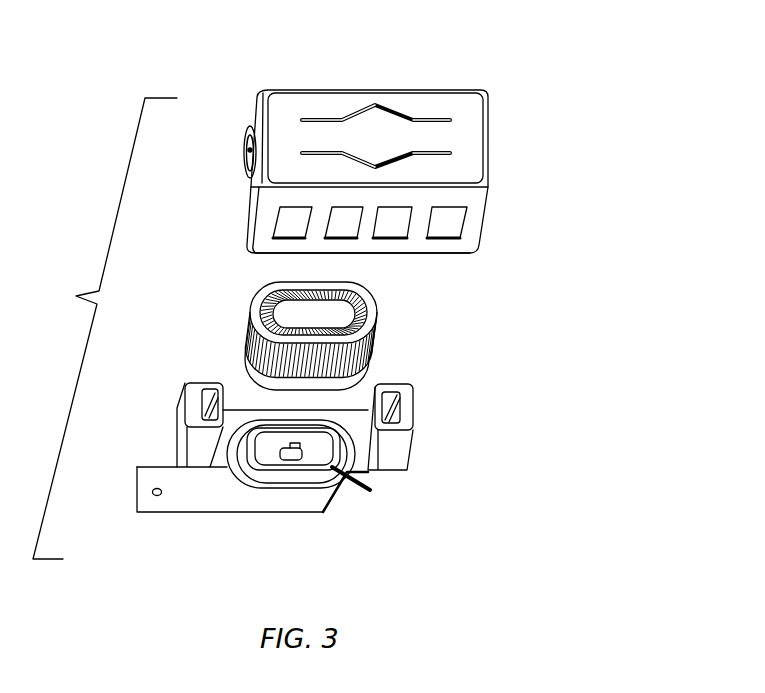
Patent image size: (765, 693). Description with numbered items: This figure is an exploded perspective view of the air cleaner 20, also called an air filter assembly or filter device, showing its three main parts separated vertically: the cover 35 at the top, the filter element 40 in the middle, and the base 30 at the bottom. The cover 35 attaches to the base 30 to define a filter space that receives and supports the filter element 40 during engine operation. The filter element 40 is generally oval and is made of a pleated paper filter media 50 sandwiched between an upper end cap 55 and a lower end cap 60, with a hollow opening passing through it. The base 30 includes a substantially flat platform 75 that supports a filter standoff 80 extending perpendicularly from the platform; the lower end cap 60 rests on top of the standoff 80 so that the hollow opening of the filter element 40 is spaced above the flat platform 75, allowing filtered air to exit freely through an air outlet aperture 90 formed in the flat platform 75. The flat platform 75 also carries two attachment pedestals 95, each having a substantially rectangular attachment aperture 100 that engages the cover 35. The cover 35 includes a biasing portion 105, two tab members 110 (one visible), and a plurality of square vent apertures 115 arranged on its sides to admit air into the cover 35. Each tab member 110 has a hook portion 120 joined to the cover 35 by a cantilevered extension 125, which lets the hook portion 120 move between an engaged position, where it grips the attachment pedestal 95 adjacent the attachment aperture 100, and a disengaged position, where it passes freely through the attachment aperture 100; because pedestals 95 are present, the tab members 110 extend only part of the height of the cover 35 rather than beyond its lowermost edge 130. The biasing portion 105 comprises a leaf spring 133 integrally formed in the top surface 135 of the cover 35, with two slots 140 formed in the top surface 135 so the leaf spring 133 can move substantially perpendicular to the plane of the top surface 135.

The air cleaner 20 is at (502, 63).
The base 30 is at (320, 500).
The cover 35 is at (432, 100).
The filter element 40 is at (375, 315).
The pleated paper filter media 50 is at (363, 357).
The upper end cap 55 is at (304, 312).
The lower end cap 60 is at (247, 357).
The flat platform 75 is at (187, 495).
The filter standoff 80 is at (262, 488).
The air outlet aperture 90 is at (302, 452).
The attachment pedestal 95 is at (190, 445).
The attachment aperture 100 is at (185, 383).
The biasing portion 105 is at (373, 120).
The tab member 110 is at (255, 133).
The vent aperture 115 is at (447, 240).
The hook portion 120 is at (245, 168).
The cantilevered extension 125 is at (245, 150).
The lowermost edge 130 is at (257, 255).
The leaf spring 133 is at (377, 133).
The top surface 135 is at (467, 117).
The slot 140 is at (322, 120).